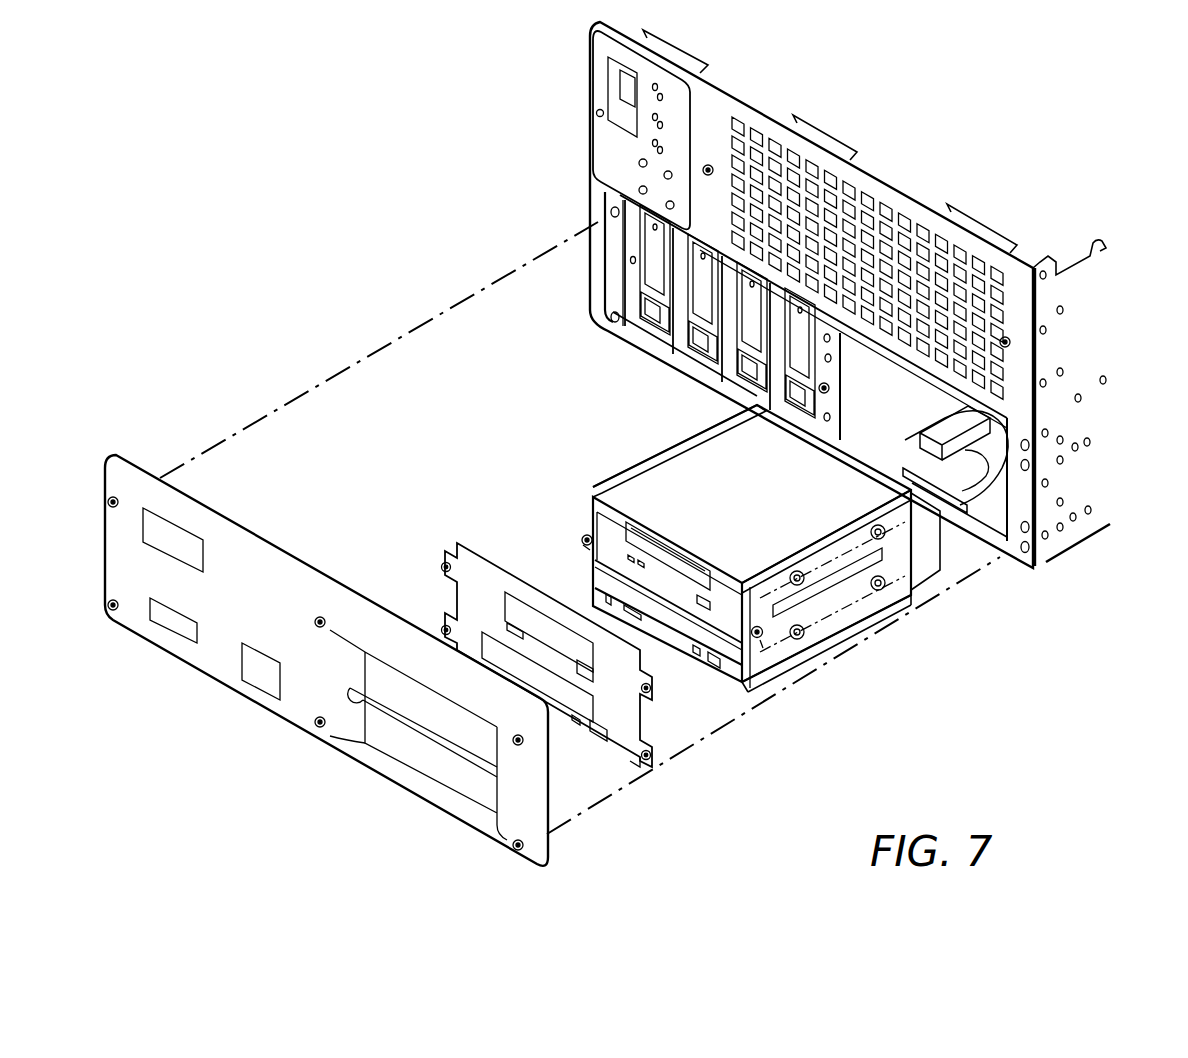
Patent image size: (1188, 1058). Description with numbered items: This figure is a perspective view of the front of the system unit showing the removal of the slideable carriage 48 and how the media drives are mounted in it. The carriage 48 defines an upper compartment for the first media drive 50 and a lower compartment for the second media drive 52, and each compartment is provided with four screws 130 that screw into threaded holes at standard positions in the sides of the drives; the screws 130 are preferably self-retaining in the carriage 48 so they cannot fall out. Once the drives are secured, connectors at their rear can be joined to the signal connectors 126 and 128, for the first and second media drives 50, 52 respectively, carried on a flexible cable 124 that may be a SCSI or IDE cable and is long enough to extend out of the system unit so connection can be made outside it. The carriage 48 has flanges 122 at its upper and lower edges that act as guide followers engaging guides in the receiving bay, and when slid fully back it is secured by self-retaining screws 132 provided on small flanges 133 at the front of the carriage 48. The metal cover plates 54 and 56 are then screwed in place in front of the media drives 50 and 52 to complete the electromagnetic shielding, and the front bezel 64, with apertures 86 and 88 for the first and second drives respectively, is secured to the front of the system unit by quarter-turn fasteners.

The slideable carriage 48 is at (623, 452).
The first media drive 50 is at (600, 517).
The second media drive 52 is at (653, 670).
The metal cover plate 54 is at (632, 690).
The metal cover plate 56 is at (640, 767).
The front bezel 64 is at (120, 546).
The aperture 86 is at (473, 733).
The aperture 88 is at (383, 733).
The flange 122 is at (693, 440).
The flexible cable 124 is at (983, 432).
The signal connector 126 is at (977, 462).
The signal connector 128 is at (967, 510).
The screw 130 is at (885, 538).
The screw 132 is at (583, 543).
The flange 133 is at (583, 538).